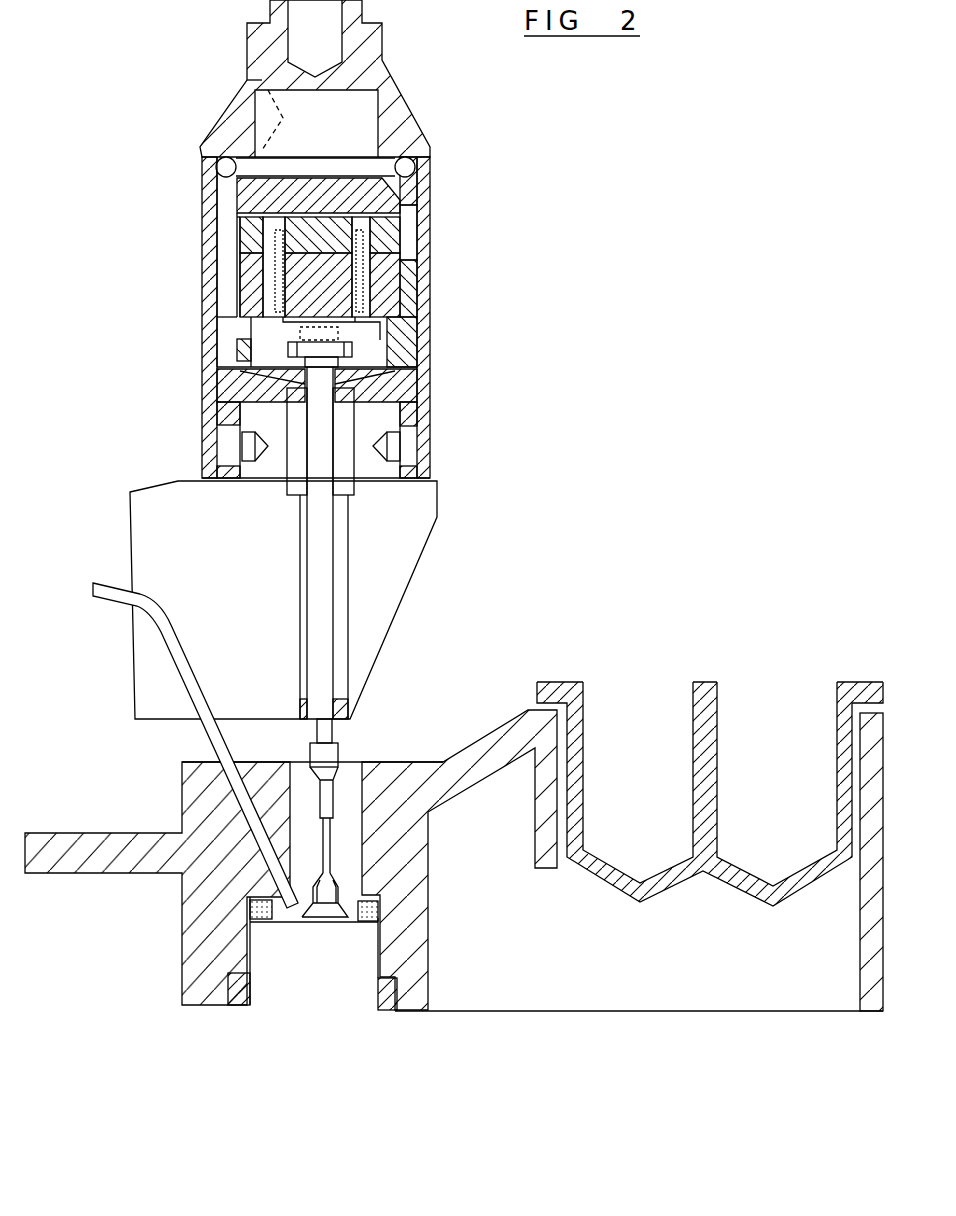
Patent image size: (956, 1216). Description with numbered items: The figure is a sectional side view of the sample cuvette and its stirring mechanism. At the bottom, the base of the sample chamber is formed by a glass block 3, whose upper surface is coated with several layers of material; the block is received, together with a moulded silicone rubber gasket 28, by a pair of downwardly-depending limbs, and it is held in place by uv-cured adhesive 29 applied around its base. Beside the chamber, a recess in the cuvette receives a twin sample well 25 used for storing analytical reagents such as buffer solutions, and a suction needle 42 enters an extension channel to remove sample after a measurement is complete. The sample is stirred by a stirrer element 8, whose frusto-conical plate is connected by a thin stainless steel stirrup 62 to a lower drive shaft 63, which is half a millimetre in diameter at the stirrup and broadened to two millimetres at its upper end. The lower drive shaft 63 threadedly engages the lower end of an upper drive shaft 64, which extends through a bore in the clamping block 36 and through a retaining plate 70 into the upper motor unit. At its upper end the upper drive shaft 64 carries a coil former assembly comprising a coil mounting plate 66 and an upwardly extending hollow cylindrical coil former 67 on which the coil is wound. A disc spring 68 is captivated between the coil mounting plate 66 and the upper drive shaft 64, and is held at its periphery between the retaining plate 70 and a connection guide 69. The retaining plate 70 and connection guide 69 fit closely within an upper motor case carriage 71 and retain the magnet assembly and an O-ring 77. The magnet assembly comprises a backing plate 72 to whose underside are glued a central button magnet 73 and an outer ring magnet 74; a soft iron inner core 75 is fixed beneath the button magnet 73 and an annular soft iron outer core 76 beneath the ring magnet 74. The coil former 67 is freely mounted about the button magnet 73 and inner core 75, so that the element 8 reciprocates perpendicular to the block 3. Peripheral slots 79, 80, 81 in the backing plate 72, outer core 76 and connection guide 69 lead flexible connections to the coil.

The glass block 3 is at (327, 968).
The stirrer element 8 is at (325, 912).
The twin sample well 25 is at (690, 875).
The moulded silicone rubber gasket 28 is at (365, 912).
The uv-cured adhesive 29 is at (240, 1010).
The clamping block 36 is at (283, 600).
The suction needle 42 is at (187, 683).
The stirrup 62 is at (340, 886).
The lower drive shaft 63 is at (327, 842).
The upper drive shaft 64 is at (327, 617).
The coil mounting plate 66 is at (385, 348).
The coil former 67 is at (365, 275).
The disc spring 68 is at (270, 372).
The connection guide 69 is at (410, 335).
The retaining plate 70 is at (410, 382).
The upper motor case carriage 71 is at (430, 187).
The backing plate 72 is at (272, 188).
The central button magnet 73 is at (395, 232).
The outer ring magnet 74 is at (252, 237).
The soft iron inner core 75 is at (335, 303).
The annular soft iron outer core 76 is at (237, 268).
The O-ring 77 is at (380, 160).
The peripheral slot 79 is at (230, 190).
The peripheral slot 80 is at (222, 300).
The peripheral slot 81 is at (232, 347).